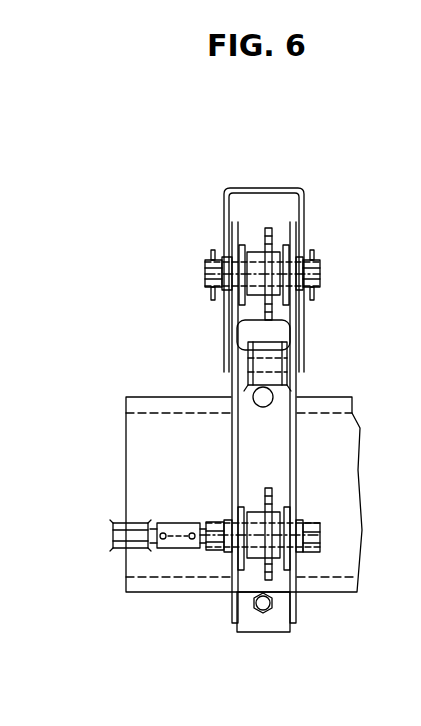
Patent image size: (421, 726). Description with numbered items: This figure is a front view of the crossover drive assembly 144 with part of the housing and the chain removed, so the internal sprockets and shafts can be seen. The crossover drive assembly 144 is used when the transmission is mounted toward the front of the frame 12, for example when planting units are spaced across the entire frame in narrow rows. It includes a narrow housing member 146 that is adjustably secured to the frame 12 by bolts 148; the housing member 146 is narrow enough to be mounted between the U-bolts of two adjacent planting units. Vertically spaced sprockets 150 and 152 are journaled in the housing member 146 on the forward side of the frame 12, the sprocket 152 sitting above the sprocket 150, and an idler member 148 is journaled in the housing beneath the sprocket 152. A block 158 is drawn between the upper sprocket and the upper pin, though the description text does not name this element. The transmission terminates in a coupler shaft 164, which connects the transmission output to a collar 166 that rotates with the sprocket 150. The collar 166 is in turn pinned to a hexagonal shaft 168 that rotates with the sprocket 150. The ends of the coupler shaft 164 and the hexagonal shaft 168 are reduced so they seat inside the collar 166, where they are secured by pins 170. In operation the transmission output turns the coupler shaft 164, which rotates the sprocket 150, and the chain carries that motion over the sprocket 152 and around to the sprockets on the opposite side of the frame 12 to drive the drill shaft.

The frame 12 is at (200, 418).
The crossover drive assembly 144 is at (227, 246).
The housing member 146 is at (212, 176).
The bolts 148 is at (268, 394).
The sprocket 150 is at (300, 593).
The sprocket 152 is at (270, 230).
The block 158 is at (270, 358).
The coupler shaft 164 is at (122, 521).
The collar 166 is at (154, 548).
The hexagonal shaft 168 is at (318, 538).
The pins 170 is at (192, 532).